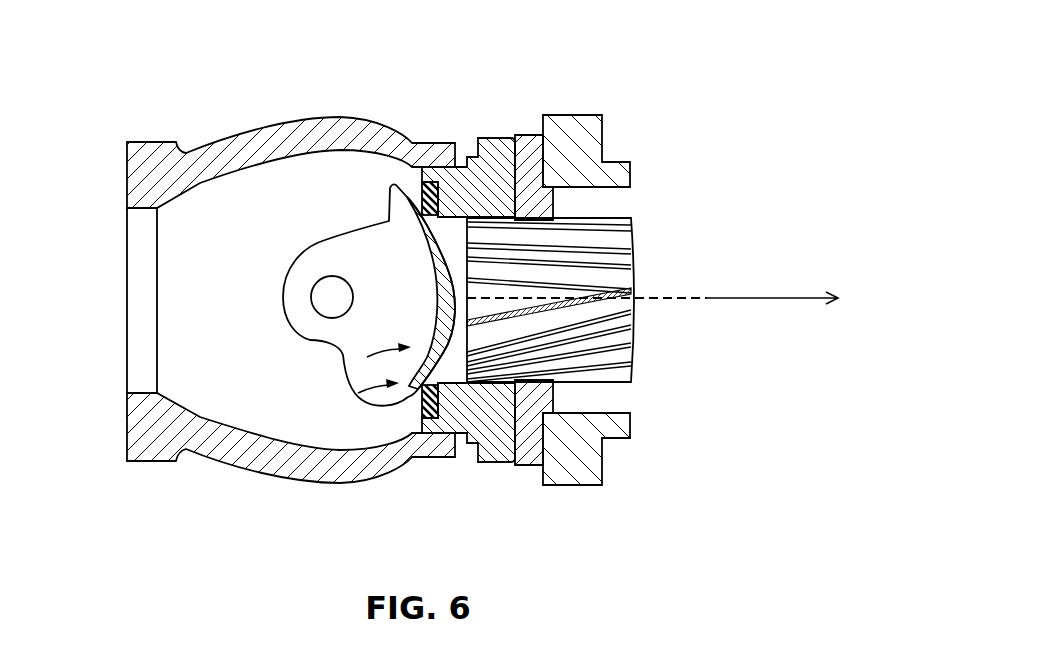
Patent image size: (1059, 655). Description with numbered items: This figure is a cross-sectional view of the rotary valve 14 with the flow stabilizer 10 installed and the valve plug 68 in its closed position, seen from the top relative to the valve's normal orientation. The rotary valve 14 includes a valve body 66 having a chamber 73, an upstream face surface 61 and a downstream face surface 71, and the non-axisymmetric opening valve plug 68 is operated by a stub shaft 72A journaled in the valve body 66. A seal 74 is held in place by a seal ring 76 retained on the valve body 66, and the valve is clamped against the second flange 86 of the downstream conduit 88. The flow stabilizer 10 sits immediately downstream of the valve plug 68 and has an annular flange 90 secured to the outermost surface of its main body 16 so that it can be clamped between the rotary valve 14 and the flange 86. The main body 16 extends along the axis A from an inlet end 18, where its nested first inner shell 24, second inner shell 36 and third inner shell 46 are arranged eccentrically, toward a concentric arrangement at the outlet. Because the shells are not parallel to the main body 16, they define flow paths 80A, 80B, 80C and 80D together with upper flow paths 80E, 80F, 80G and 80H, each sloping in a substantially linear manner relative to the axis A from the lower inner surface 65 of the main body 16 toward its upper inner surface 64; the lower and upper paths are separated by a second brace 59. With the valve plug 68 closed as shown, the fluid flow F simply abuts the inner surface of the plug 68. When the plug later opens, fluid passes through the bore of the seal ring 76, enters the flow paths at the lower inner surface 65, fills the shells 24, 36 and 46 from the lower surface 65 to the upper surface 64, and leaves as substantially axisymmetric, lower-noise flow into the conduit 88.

The flow stabilizer 10 is at (614, 212).
The rotary valve 14 is at (279, 70).
The main body 16 is at (632, 222).
The inlet end 18 is at (467, 243).
The first inner shell 24 is at (633, 237).
The second inner shell 36 is at (632, 248).
The third inner shell 46 is at (633, 265).
The second brace 59 is at (633, 290).
The upstream face surface 61 is at (127, 432).
The upper inner surface 64 is at (632, 218).
The lower inner surface 65 is at (633, 373).
The valve body 66 is at (353, 131).
The valve plug 68 is at (437, 285).
The downstream face surface 71 is at (460, 437).
The stub shaft 72A is at (320, 297).
The chamber 73 is at (242, 192).
The seal 74 is at (432, 418).
The seal ring 76 is at (434, 183).
The fourth flow path 80A is at (480, 333).
The third flow path 80B is at (527, 347).
The second flow path 80C is at (573, 357).
The first flow path 80D is at (608, 370).
The upper flow path 80E is at (488, 270).
The upper flow path 80F is at (565, 247).
The upper flow path 80G is at (585, 233).
The upper flow path 80H is at (513, 290).
The second flange 86 is at (594, 115).
The conduit 88 is at (603, 162).
The annular flange 90 is at (533, 465).
The main body axis A is at (652, 284).
The fluid flow F is at (372, 394).